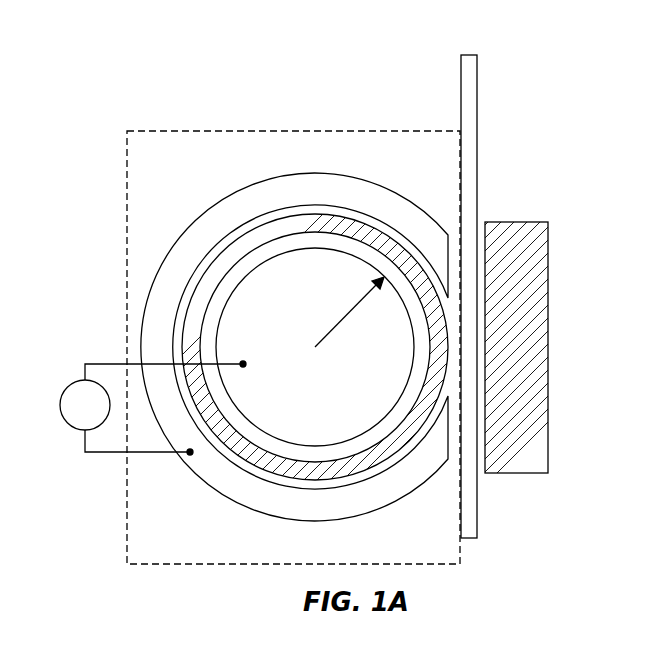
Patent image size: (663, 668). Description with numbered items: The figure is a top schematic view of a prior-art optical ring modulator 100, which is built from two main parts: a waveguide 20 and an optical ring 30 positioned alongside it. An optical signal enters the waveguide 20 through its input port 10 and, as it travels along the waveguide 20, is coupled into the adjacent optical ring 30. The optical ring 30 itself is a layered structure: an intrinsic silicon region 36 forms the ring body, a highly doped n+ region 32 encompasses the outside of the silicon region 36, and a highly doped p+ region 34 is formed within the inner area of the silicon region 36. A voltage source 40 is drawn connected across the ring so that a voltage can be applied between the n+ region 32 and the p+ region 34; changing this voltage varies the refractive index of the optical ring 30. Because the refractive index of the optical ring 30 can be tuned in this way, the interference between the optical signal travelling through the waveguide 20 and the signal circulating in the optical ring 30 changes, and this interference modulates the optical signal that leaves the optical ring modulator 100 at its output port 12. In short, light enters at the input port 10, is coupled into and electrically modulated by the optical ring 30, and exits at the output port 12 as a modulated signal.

The optical ring modulator 100 is at (110, 101).
The input port 10 is at (466, 540).
The output port 12 is at (468, 55).
The waveguide 20 is at (478, 174).
The optical ring 30 is at (127, 487).
The highly doped n+ region 32 is at (160, 294).
The highly doped p+ region 34 is at (315, 300).
The intrinsic silicon region 36 is at (279, 473).
The voltage source 40 is at (60, 404).